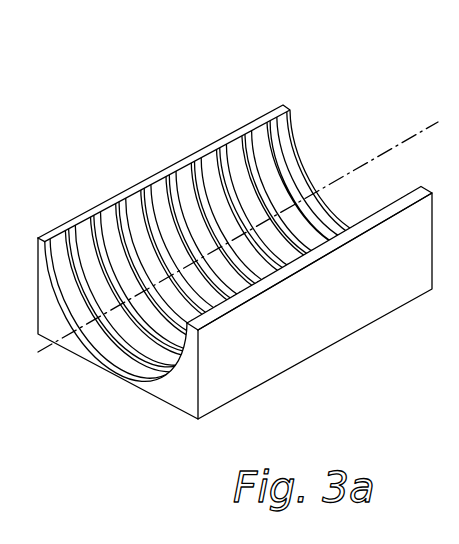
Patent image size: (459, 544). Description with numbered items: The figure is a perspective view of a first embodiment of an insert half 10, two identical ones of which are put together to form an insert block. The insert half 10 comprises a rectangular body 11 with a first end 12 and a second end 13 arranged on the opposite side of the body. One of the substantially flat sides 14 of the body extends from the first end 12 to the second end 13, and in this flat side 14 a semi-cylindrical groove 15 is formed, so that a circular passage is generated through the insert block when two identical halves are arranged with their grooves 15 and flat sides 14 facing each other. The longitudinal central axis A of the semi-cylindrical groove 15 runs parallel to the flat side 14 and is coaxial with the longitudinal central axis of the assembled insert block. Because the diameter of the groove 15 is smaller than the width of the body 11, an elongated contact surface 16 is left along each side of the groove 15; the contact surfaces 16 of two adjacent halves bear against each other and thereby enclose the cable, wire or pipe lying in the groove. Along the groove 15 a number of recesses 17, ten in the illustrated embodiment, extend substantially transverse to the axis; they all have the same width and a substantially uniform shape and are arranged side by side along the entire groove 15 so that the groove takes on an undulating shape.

The insert half 10 is at (247, 255).
The rectangular body 11 is at (256, 351).
The first end 12 is at (118, 359).
The second end 13 is at (221, 244).
The flat side 14 is at (275, 104).
The semi-cylindrical groove 15 is at (69, 338).
The contact surface 16 is at (180, 163).
The recesses 17 is at (134, 215).
The longitudinal central axis A is at (42, 352).